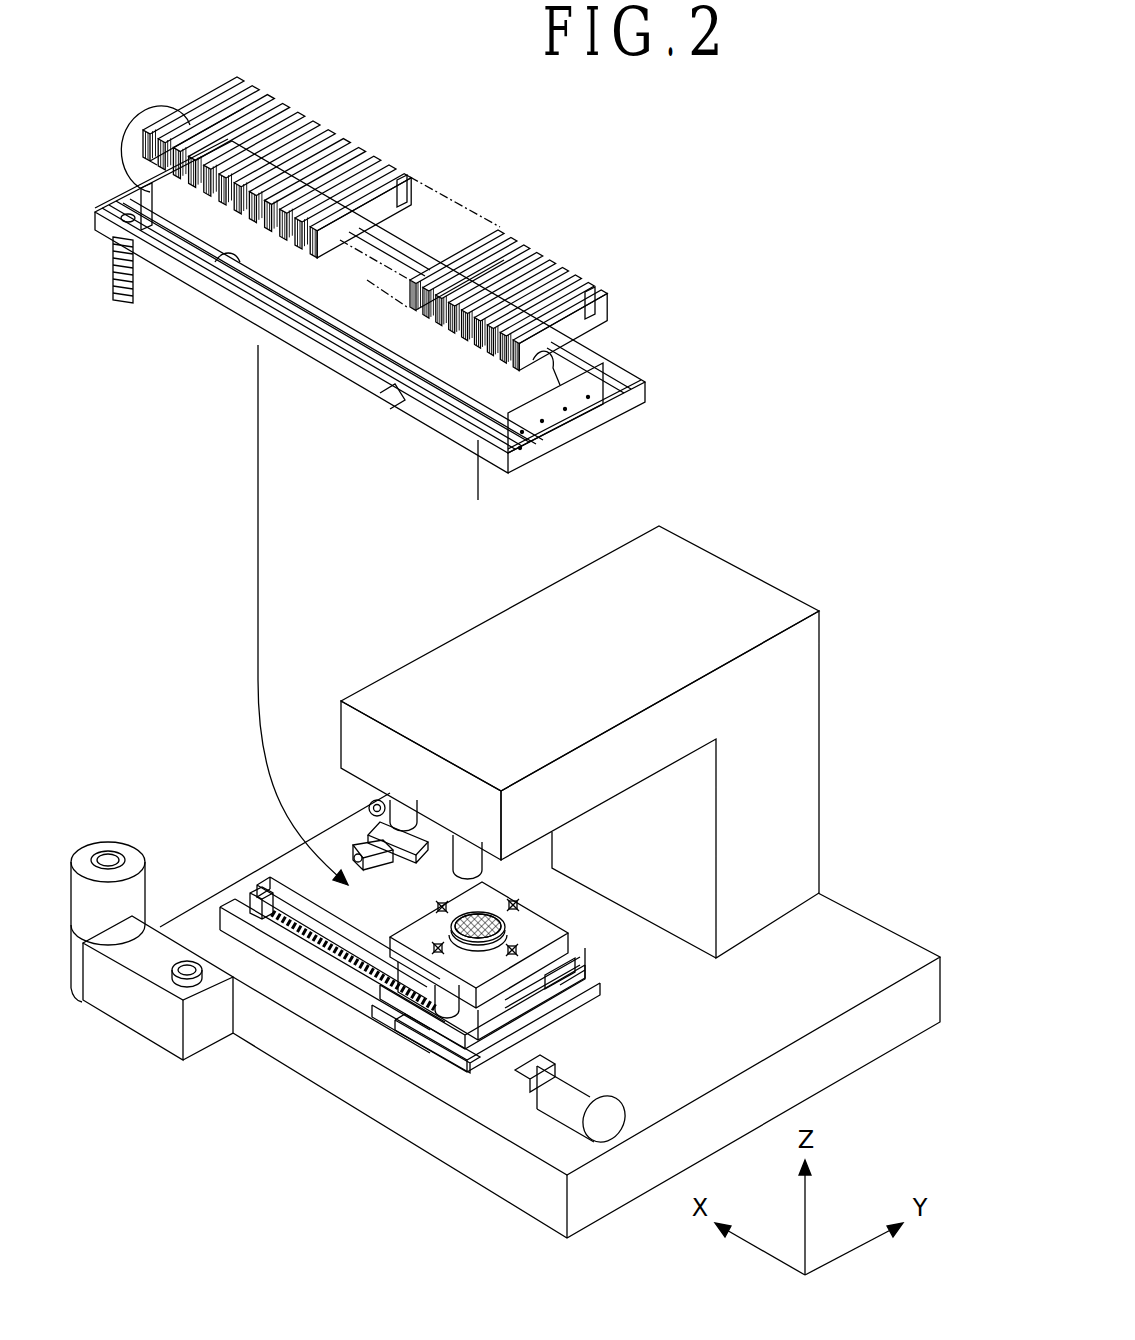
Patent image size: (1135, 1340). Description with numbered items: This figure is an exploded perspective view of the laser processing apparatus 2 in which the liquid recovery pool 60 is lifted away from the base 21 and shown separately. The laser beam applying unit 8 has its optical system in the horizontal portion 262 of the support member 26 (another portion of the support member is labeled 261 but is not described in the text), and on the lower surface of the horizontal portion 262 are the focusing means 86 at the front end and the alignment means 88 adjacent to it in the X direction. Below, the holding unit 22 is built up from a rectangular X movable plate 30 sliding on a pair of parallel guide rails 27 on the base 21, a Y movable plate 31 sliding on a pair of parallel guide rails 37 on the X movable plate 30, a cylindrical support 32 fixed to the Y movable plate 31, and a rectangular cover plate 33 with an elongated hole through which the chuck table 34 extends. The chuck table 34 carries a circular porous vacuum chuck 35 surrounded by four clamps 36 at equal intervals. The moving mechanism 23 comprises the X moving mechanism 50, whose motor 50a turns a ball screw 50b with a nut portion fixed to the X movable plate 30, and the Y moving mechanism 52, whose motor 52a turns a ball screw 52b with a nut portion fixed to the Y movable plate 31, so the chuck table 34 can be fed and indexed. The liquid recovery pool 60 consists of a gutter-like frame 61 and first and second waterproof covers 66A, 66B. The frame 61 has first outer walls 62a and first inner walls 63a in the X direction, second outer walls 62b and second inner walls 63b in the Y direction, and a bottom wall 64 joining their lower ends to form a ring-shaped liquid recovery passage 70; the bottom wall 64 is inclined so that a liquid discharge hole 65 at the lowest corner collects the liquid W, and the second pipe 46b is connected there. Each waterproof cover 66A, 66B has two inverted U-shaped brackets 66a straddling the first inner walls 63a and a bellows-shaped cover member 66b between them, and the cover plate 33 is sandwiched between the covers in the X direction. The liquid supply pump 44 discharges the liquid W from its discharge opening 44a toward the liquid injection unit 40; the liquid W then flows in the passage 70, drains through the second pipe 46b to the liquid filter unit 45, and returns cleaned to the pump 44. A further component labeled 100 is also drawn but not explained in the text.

The laser processing apparatus 2 is at (871, 808).
The laser beam applying unit 8 is at (377, 800).
The base 21 is at (874, 938).
The holding unit 22 is at (434, 1070).
The moving mechanism 23 is at (624, 1053).
The support member 26 is at (642, 742).
The vertical portion of support column 261 is at (800, 650).
The horizontal portion 262 is at (781, 613).
The guide rails 27 is at (232, 903).
The X movable plate 30 is at (420, 940).
The Y movable plate 31 is at (453, 1136).
The cylindrical support 32 is at (515, 1010).
The cover plate 33 is at (495, 1000).
The chuck table 34 is at (390, 930).
The vacuum chuck 35 is at (406, 950).
The clamps 36 is at (478, 1000).
The guide rails 37 is at (440, 985).
The liquid injection unit 40 is at (360, 827).
The liquid supply pump 44 is at (86, 899).
The discharge opening 44a is at (90, 850).
The liquid filter unit 45 is at (200, 1030).
The second pipe 46b is at (112, 277).
The X moving mechanism 50 is at (607, 1081).
The motor 50a is at (590, 1100).
The ball screw 50b is at (545, 1060).
The Y moving mechanism 52 is at (602, 983).
The motor 52a is at (556, 985).
The ball screw 52b is at (550, 1000).
The liquid recovery pool 60 is at (367, 278).
The frame 61 is at (407, 413).
The first outer walls 62a is at (343, 362).
The second outer walls 62b is at (120, 197).
The first inner walls 63a is at (217, 260).
The second inner walls 63b is at (150, 193).
The bottom wall 64 is at (387, 390).
The liquid discharge hole 65 is at (118, 212).
The first waterproof cover 66A is at (518, 227).
The second waterproof cover 66B is at (285, 93).
The brackets 66a is at (197, 92).
The waterproof cover member 66b is at (340, 158).
The liquid recovery passage 70 is at (478, 485).
The focusing means 86 is at (427, 822).
The alignment means 88 is at (483, 870).
The nozzle unit 100 is at (368, 798).
The liquid W is at (312, 342).